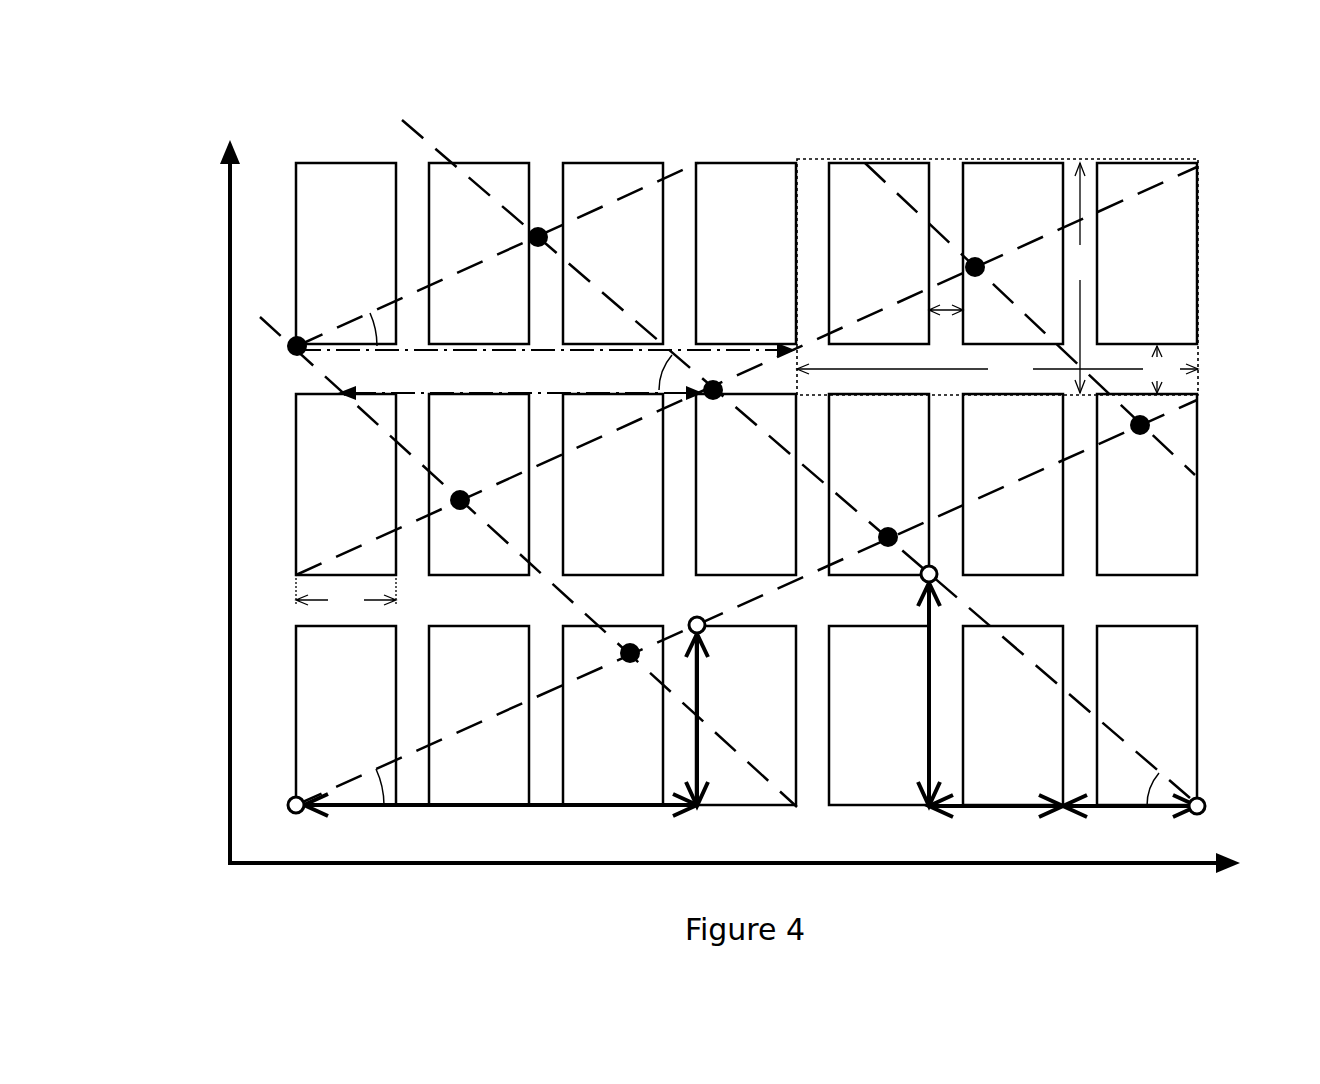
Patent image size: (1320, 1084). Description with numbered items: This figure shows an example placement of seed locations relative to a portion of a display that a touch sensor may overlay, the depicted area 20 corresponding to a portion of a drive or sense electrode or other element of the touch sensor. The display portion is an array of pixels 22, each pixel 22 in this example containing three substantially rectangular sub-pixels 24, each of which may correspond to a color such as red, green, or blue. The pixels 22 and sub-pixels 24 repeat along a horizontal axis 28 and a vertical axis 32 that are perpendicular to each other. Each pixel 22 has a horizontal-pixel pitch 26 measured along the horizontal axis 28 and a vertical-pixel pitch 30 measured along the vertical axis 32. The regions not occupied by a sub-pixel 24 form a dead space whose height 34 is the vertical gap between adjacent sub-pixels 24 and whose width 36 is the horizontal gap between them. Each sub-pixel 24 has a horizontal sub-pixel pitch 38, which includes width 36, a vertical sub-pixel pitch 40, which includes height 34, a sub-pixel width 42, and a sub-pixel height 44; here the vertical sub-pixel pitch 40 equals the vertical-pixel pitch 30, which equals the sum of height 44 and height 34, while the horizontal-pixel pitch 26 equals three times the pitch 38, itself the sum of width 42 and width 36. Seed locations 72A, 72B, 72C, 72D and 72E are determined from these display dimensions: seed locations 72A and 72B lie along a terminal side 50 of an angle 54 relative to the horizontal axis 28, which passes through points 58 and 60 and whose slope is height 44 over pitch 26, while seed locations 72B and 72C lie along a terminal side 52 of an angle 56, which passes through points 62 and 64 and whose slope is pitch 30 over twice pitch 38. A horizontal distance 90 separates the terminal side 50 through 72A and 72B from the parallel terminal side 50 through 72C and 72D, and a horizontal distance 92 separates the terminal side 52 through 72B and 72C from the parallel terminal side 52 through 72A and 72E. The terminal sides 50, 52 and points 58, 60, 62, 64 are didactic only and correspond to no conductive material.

The area 20 is at (733, 117).
The pixel 22 is at (937, 158).
The sub-pixel 24 is at (1161, 728).
The horizontal-pixel pitch (HPP) 26 is at (545, 808).
The horizontal axis 28 is at (612, 863).
The vertical-pixel pitch (VPP) 30 is at (1076, 278).
The vertical axis 32 is at (230, 470).
The dead-space height 34 is at (1157, 369).
The dead-space width 36 is at (946, 326).
The horizontal sub-pixel pitch (HSPP) 38 is at (1045, 812).
The vertical sub-pixel pitch (VSPP) 40 is at (929, 630).
The sub-pixel width (SPW) 42 is at (346, 596).
The sub-pixel height (SPH) 44 is at (697, 770).
The terminal side of angle 54 50 is at (1157, 190).
The terminal side of angle 56 52 is at (410, 128).
The angle 54 is at (335, 337).
The angle 56 is at (670, 397).
The point 58 is at (296, 815).
The point 60 is at (694, 616).
The point 62 is at (1200, 814).
The point 64 is at (931, 565).
The seed location 72A is at (297, 337).
The seed location 72B is at (540, 228).
The seed location 72C is at (713, 380).
The seed location 72D is at (975, 257).
The seed location 72E is at (460, 491).
The horizontal distance 90 is at (502, 350).
The horizontal distance 92 is at (395, 393).